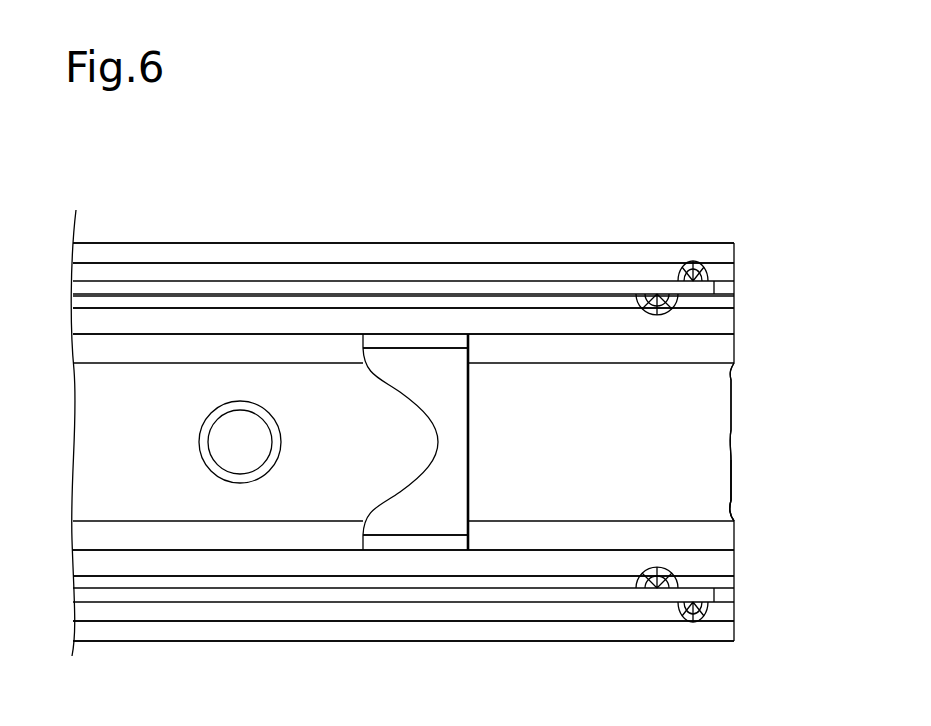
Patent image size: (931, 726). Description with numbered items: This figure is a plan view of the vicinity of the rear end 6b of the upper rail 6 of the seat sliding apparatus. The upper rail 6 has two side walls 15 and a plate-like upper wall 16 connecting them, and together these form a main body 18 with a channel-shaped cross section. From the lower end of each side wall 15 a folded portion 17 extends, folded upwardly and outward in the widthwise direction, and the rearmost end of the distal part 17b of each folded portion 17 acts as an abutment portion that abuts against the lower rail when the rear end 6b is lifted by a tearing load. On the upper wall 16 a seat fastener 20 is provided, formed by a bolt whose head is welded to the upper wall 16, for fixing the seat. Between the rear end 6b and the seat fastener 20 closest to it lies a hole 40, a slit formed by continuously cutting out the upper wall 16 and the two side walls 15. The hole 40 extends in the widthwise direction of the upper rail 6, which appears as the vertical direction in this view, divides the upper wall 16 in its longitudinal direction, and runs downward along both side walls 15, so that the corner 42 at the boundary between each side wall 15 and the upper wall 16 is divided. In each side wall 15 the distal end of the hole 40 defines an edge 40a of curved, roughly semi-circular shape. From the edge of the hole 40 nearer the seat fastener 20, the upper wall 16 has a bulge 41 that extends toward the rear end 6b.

The upper rail 6 is at (142, 165).
The rear end 6b is at (731, 475).
The side wall 15 is at (132, 335).
The upper wall 16 is at (712, 438).
The main body 18 is at (403, 441).
The folded portion 17 is at (583, 250).
The distal part 17b is at (728, 287).
The seat fastener 20 is at (198, 441).
The hole 40 is at (445, 441).
The edge 40a is at (412, 345).
The bulge 41 is at (430, 455).
The corner 42 is at (235, 347).